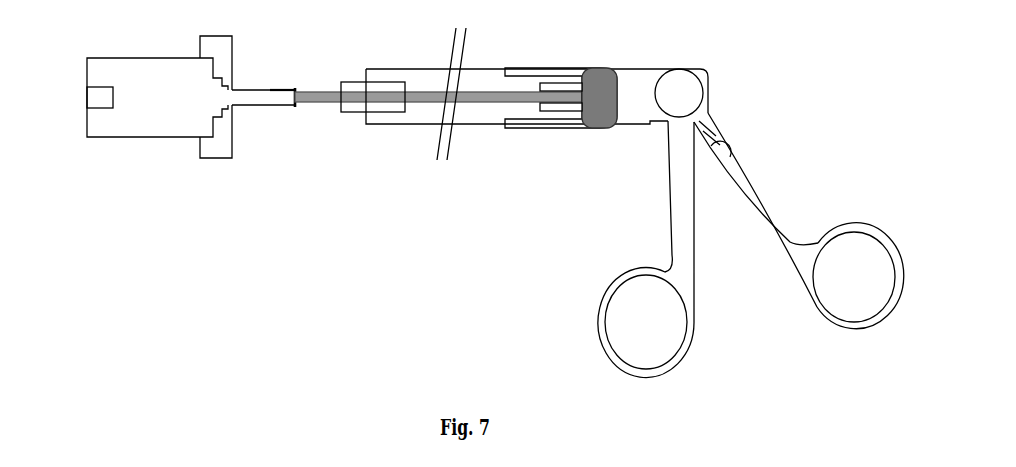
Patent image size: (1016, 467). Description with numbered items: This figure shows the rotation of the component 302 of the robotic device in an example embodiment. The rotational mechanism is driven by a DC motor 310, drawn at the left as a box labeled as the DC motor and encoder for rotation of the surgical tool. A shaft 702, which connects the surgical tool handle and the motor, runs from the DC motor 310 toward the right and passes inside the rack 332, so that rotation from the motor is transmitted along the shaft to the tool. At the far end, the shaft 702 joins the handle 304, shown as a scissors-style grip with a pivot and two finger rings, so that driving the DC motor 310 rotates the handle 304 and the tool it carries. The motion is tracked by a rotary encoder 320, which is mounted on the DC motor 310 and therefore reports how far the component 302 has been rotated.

The DC motor 310 is at (87, 107).
The rotary encoder 320 is at (87, 143).
The component 302 is at (166, 292).
The shaft 702 is at (423, 96).
The rack 332 is at (477, 68).
The handle 304 is at (602, 310).